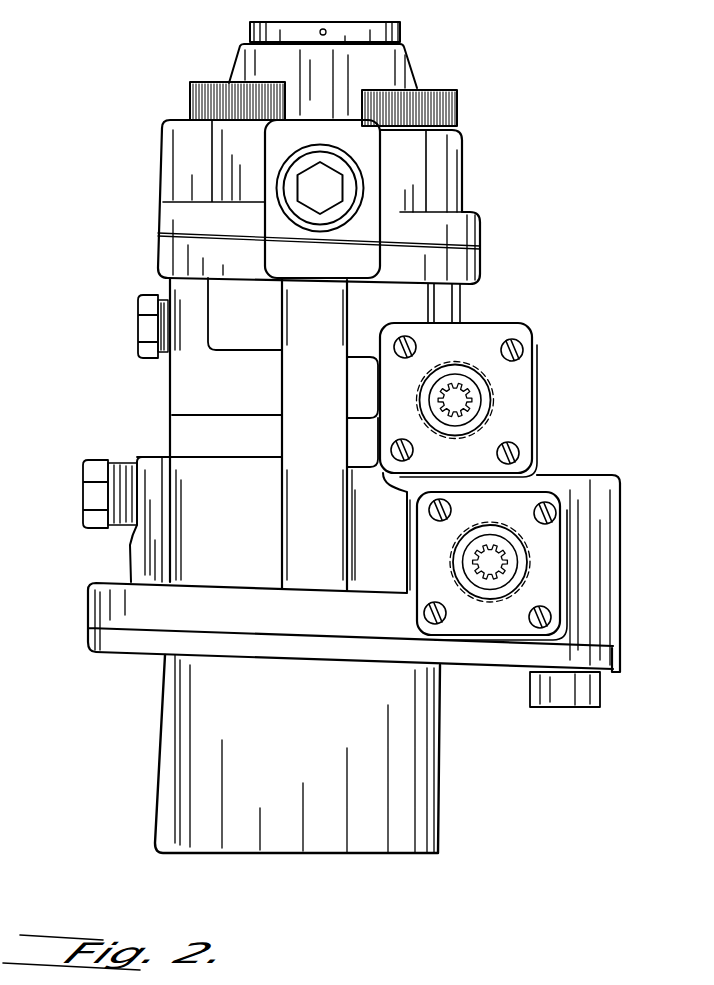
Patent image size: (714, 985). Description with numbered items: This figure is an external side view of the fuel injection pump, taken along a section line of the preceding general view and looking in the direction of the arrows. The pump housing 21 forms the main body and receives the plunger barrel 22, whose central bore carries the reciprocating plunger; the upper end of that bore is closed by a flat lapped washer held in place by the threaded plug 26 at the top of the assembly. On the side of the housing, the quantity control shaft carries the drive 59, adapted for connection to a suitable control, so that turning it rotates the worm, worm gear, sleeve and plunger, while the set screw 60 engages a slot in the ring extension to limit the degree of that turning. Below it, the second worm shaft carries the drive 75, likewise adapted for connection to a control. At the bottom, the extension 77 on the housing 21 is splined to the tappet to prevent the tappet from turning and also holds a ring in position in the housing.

The pump housing 21 is at (410, 310).
The plunger barrel 22 is at (440, 153).
The threaded plug 26 is at (383, 30).
The drive 59 is at (473, 398).
The set screw 60 is at (150, 333).
The drive 75 is at (505, 558).
The extension 77 is at (405, 757).